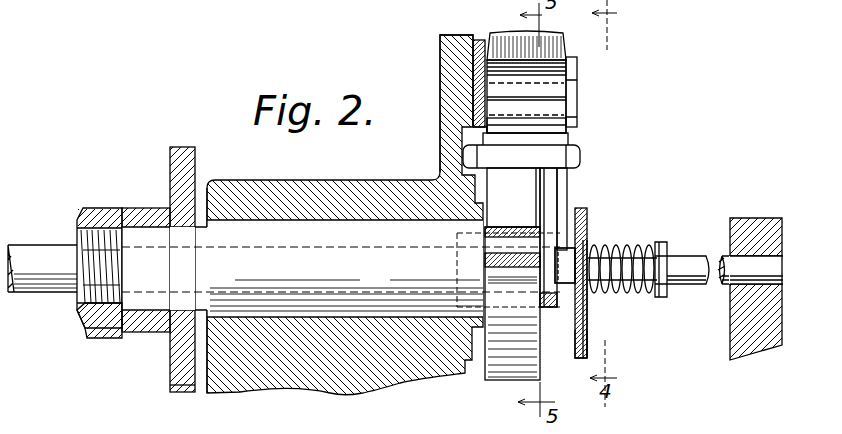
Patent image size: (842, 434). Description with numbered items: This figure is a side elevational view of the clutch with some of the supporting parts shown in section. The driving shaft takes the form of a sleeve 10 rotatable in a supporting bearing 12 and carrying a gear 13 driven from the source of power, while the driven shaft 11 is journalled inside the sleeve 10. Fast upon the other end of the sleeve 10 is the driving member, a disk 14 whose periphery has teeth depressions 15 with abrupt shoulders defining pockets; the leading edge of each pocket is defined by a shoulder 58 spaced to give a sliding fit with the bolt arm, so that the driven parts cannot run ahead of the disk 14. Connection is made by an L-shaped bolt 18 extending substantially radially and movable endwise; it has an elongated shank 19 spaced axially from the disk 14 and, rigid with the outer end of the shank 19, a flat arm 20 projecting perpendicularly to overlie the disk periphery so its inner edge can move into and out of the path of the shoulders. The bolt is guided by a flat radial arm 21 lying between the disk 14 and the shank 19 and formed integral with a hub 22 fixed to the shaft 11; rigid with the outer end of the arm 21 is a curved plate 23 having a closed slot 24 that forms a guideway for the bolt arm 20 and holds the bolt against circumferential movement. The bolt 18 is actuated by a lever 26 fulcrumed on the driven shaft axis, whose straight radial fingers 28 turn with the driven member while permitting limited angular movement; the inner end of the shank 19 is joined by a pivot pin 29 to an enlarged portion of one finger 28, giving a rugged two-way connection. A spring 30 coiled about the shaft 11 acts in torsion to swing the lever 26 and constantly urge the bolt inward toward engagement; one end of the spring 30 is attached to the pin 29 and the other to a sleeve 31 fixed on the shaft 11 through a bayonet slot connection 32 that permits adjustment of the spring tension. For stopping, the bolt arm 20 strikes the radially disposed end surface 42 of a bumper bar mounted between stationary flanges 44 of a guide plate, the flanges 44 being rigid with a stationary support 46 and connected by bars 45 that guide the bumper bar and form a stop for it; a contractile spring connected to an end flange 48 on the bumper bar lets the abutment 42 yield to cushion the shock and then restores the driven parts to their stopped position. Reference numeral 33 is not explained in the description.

The sleeve 10 is at (297, 232).
The driven shaft 11 is at (45, 248).
The supporting bearing 12 is at (268, 181).
The gear 13 is at (170, 165).
The disk 14 is at (505, 373).
The peripheral teeth depressions 15 is at (470, 266).
The L-shaped bolt 18 is at (570, 140).
The shank 19 is at (567, 199).
The arm 20 is at (483, 138).
The radial arm 21 is at (550, 193).
The hub 22 is at (547, 307).
The curved plate 23 is at (465, 157).
The closed slot 24 is at (520, 150).
The lever 26 is at (598, 308).
The fingers 28 is at (588, 212).
The pivot pin 29 is at (588, 230).
The spring 30 is at (646, 243).
The sleeve 31 is at (667, 243).
The bayonet slot connection 32 is at (617, 292).
The lever 33 is at (577, 360).
The end surface 42 is at (547, 131).
The stationary flanges 44 is at (442, 67).
The bars 45 is at (549, 88).
The stationary support 46 is at (457, 13).
The end flange 48 is at (510, 32).
The shoulder 58 is at (507, 260).